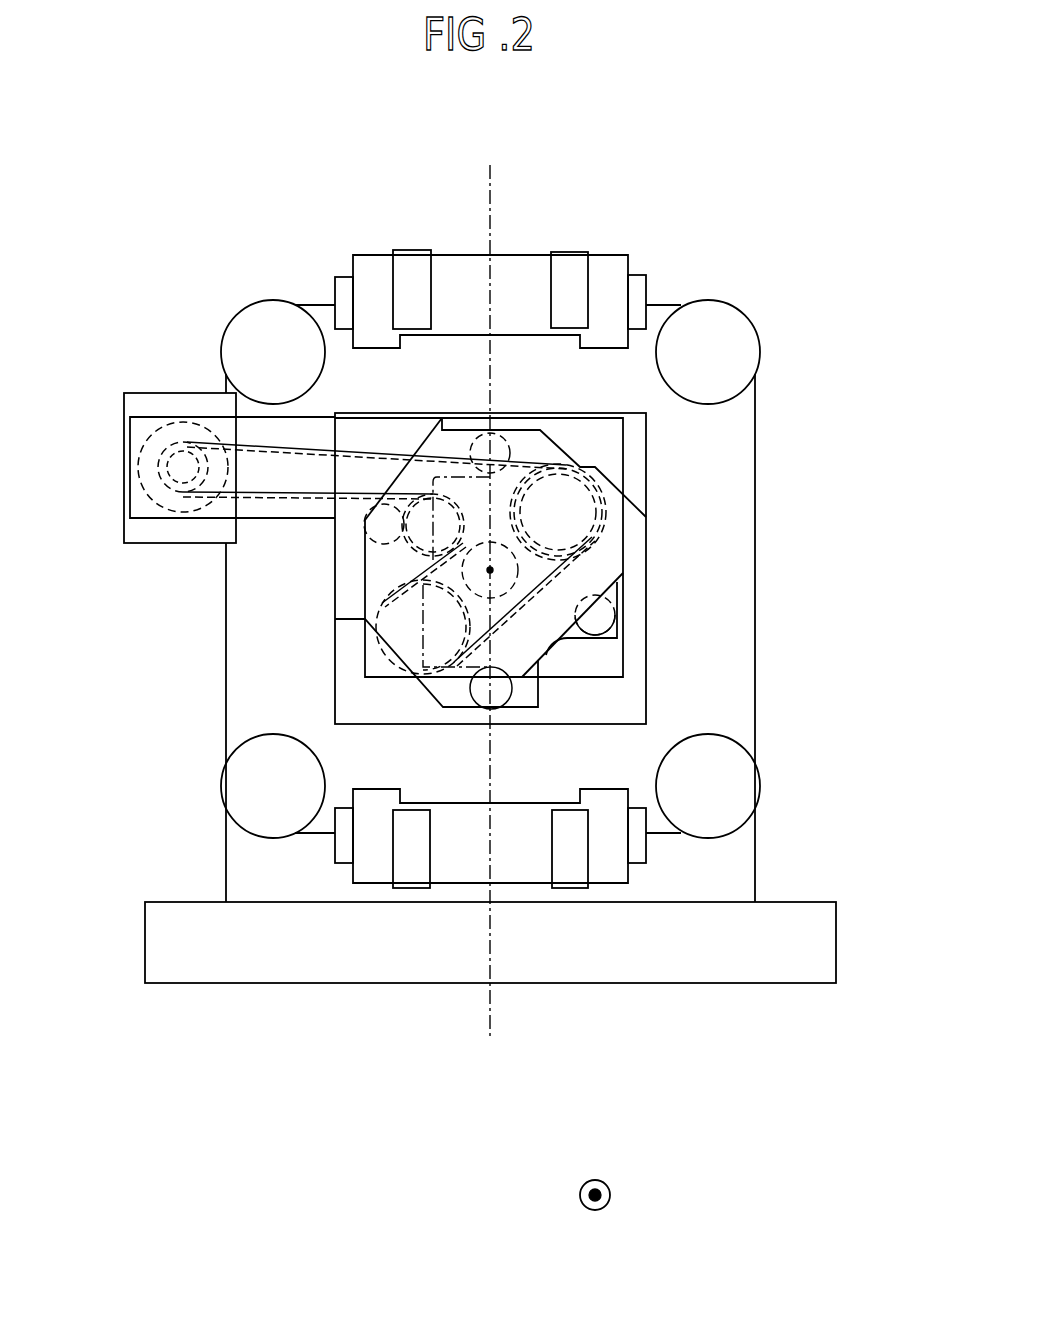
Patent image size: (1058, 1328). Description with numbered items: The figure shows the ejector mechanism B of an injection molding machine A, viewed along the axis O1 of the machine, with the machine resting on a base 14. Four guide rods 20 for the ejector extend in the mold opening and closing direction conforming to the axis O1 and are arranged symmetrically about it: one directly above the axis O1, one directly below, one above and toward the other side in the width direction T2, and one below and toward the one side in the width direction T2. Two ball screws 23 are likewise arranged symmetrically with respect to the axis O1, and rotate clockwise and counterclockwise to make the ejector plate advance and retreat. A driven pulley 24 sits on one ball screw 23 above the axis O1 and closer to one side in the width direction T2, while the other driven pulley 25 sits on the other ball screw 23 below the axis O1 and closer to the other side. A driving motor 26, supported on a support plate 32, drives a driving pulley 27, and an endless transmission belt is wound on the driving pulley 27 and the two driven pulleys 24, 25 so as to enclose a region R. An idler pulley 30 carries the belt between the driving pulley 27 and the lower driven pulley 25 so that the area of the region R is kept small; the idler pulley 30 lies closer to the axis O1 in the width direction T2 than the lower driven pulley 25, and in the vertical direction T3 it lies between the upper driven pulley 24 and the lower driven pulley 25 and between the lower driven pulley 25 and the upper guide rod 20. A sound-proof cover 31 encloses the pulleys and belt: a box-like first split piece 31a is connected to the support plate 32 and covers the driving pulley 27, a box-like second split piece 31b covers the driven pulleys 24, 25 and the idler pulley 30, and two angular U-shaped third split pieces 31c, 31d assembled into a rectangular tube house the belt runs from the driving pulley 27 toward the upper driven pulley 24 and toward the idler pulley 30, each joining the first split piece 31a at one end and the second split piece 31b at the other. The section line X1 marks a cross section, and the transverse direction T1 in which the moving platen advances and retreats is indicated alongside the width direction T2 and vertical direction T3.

The base 14 is at (673, 958).
The guide rods 20 is at (513, 436).
The ball screws 23 is at (557, 503).
The driven pulley 24 is at (514, 432).
The driven pulley 25 is at (477, 650).
The driving motor 26 is at (157, 425).
The driving pulley 27 is at (197, 442).
The idler pulley 30 is at (410, 550).
The sound-proof cover 31 is at (357, 577).
The first split piece 31a is at (157, 519).
The second split piece 31b is at (624, 587).
The third split piece 31c is at (313, 412).
The third split piece 31d is at (424, 575).
The support plate 32 is at (124, 393).
The injection molding machine A is at (677, 197).
The ejector mechanism B is at (660, 470).
The axis O1 is at (490, 570).
The region R is at (360, 474).
The section line X1 is at (490, 165).
The transverse direction T1 is at (610, 1191).
The width direction T2 is at (470, 1195).
The vertical direction T3 is at (422, 1165).